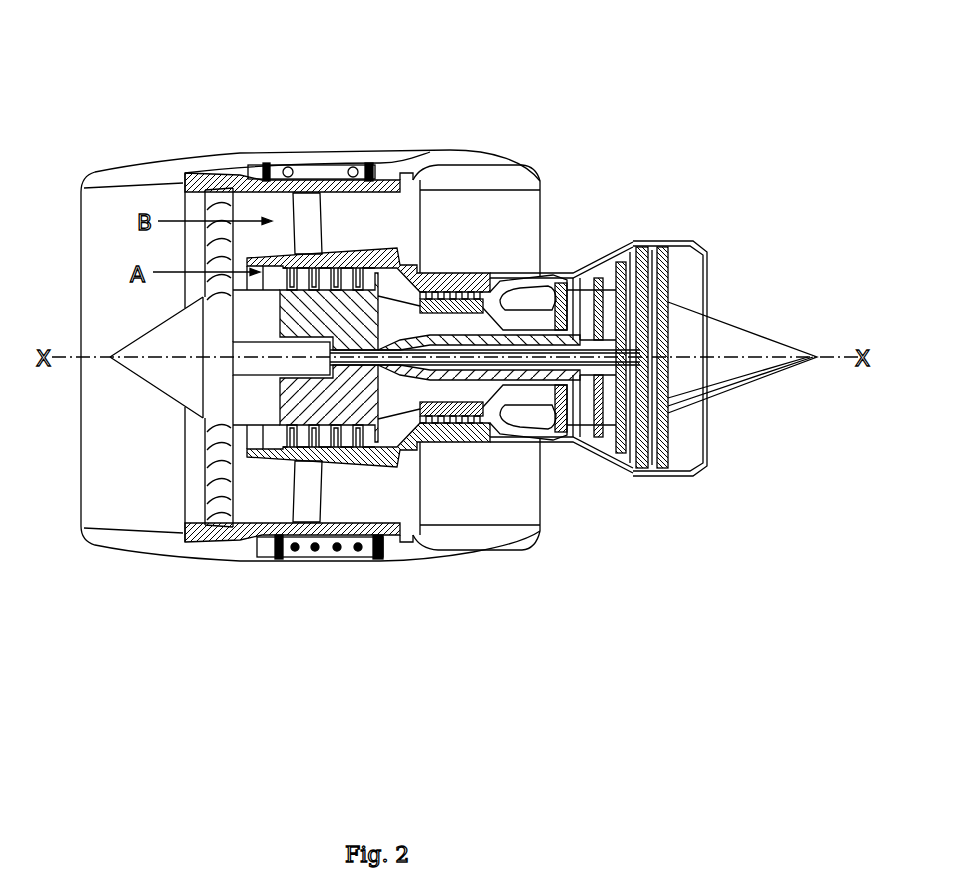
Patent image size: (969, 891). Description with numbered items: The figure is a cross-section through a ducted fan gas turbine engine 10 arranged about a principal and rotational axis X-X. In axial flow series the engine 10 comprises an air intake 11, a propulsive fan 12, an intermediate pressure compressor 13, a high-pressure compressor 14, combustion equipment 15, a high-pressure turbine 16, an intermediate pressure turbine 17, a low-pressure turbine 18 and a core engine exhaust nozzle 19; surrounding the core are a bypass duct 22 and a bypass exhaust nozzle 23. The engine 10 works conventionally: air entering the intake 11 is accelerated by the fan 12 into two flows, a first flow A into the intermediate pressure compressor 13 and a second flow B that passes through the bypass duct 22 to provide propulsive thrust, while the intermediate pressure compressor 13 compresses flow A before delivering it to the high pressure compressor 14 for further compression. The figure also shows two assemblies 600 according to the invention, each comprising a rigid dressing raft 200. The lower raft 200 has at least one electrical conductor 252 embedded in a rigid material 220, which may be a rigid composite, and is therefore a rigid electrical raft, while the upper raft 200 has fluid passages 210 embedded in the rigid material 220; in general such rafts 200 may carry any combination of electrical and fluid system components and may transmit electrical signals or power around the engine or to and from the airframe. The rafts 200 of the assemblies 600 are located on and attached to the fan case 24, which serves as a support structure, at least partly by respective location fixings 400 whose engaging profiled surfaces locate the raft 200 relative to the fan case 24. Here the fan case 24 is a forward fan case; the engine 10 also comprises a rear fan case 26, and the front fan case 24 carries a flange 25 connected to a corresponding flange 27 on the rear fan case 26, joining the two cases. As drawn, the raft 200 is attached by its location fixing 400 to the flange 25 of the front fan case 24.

The ducted fan gas turbine engine 10 is at (148, 129).
The air intake 11 is at (133, 187).
The propulsive fan 12 is at (205, 477).
The intermediate pressure compressor 13 is at (340, 448).
The high-pressure compressor 14 is at (440, 291).
The combustion equipment 15 is at (497, 440).
The high-pressure turbine 16 is at (560, 440).
The intermediate pressure turbine 17 is at (597, 283).
The low-pressure turbine 18 is at (612, 468).
The core engine exhaust nozzle 19 is at (703, 241).
The bypass duct 22 is at (509, 226).
The bypass exhaust nozzle 23 is at (543, 184).
The fan case 24 is at (206, 172).
The flange 25 is at (410, 170).
The rear fan case 26 is at (505, 160).
The flange 27 is at (420, 170).
The rigid dressing raft 200 is at (367, 72).
The fluid passages 210 is at (289, 166).
The rigid material 220 is at (266, 162).
The electrical conductor 252 is at (358, 550).
The location fixing 400 is at (376, 158).
The assembly 600 is at (380, 93).